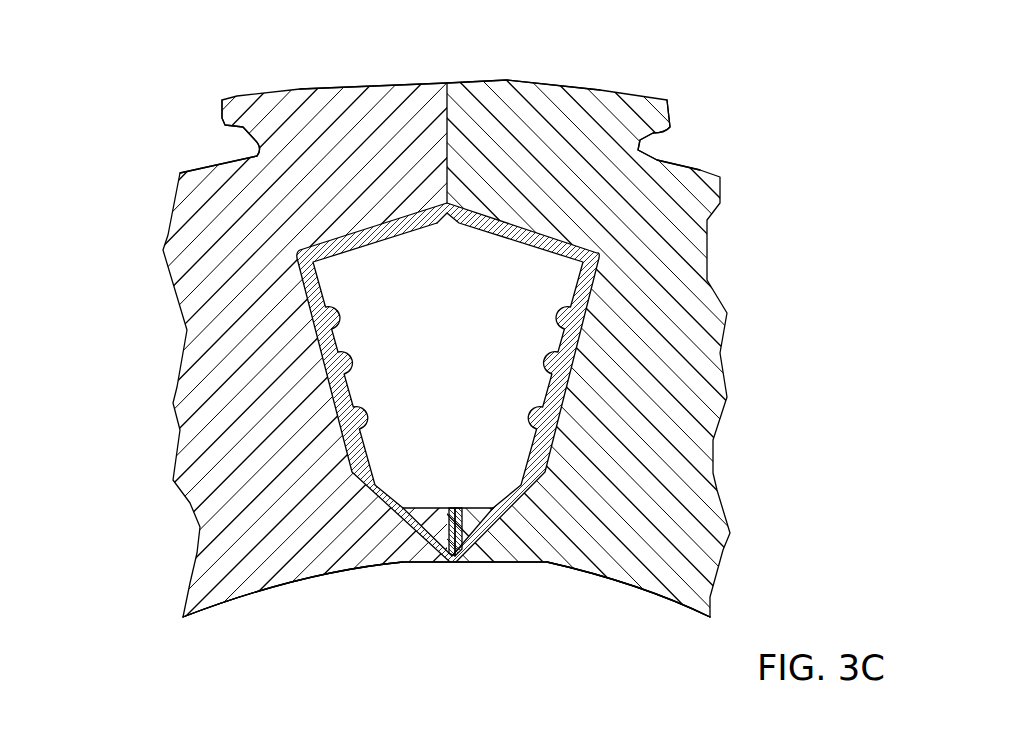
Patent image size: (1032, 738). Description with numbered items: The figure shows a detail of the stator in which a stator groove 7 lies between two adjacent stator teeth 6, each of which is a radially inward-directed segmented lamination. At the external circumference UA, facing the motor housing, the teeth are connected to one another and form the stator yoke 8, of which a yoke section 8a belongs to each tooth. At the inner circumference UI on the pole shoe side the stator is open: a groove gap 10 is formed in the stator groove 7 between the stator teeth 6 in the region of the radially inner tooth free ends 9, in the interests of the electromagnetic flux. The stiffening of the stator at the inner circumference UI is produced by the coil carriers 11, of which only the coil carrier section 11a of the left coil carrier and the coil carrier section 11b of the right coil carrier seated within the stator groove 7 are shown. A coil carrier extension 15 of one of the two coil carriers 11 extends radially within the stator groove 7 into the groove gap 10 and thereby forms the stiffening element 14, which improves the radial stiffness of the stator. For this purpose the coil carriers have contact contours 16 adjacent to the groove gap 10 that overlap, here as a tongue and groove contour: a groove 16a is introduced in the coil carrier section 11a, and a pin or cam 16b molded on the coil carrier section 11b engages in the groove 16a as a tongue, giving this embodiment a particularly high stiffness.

The stator tooth 6 is at (684, 247).
The stator groove 7 is at (446, 394).
The stator yoke 8 is at (447, 84).
The yoke section 8a is at (257, 145).
The tooth free end 9 is at (330, 556).
The groove gap 10 is at (437, 560).
The coil carrier 11 is at (446, 360).
The coil carrier section 11a is at (315, 312).
The coil carrier section 11b is at (572, 327).
The stiffening element 14 is at (627, 531).
The coil carrier extension 15 is at (627, 478).
The contact contour 16 is at (627, 478).
The groove 16a is at (449, 553).
The pin or cam 16b is at (467, 540).
The external circumference UA is at (269, 88).
The inner circumference UI is at (250, 593).